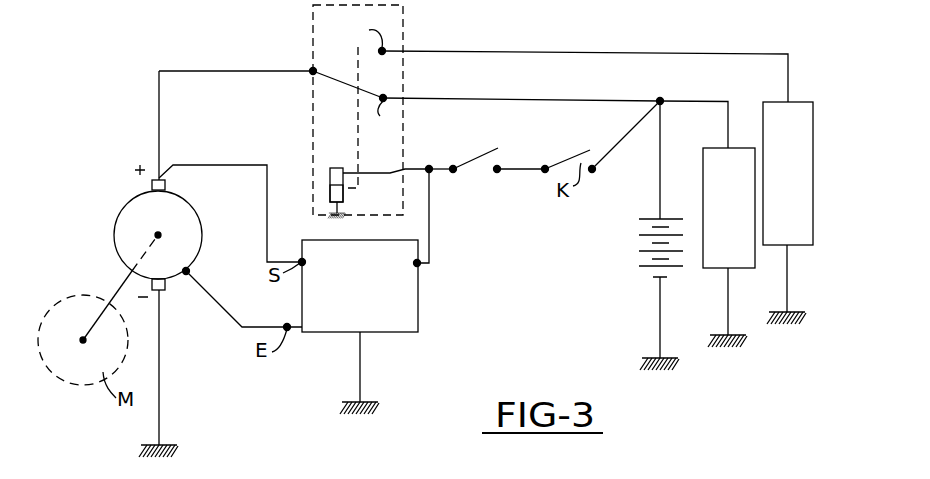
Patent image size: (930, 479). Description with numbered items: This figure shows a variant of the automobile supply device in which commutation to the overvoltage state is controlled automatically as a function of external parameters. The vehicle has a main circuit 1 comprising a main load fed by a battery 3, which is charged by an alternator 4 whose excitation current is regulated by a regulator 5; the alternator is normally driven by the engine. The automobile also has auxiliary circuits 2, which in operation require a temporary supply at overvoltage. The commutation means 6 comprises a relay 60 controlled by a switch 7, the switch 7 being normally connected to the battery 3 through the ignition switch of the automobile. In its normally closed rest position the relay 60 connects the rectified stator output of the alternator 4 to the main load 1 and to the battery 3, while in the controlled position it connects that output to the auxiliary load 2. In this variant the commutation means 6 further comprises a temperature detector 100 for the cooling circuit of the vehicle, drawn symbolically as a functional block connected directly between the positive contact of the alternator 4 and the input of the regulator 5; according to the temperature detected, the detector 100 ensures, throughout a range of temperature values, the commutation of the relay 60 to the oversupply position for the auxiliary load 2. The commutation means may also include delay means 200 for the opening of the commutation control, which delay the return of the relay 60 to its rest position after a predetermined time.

The main circuit 1 is at (722, 258).
The auxiliary circuits 2 is at (781, 233).
The battery 3 is at (648, 268).
The alternator 4 is at (125, 221).
The regulator 5 is at (418, 283).
The commutation means 6 is at (398, 25).
The switch 7 is at (489, 163).
The relay 60 is at (318, 72).
The temperature detector 100 is at (324, 165).
The delay means 200 is at (330, 188).